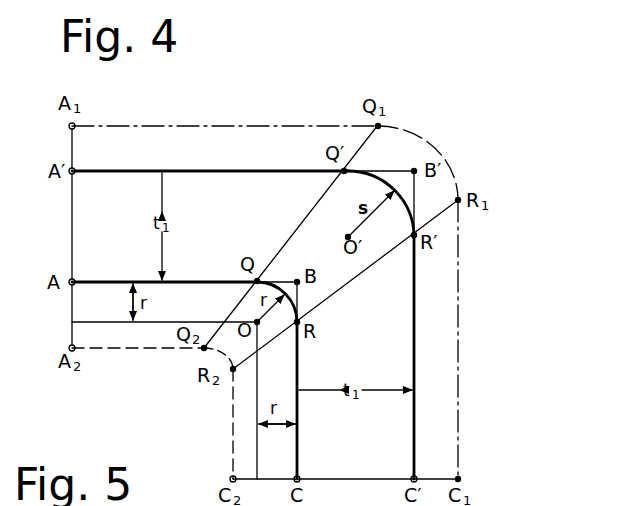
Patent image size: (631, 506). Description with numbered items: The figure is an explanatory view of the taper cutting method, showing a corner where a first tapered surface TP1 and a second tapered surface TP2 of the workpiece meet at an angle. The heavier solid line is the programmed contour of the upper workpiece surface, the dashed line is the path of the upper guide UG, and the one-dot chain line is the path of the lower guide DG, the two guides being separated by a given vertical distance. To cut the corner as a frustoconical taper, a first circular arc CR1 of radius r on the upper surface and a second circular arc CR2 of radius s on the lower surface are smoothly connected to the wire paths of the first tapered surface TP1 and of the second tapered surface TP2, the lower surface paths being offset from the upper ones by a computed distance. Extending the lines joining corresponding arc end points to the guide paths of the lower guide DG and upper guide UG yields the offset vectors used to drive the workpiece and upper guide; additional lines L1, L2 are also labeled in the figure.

The lower guide DG is at (239, 157).
The upper guide UG is at (126, 353).
The first tapered surface TP1 is at (214, 188).
The second tapered surface TP2 is at (408, 431).
The first circular arc CR1 is at (297, 280).
The second circular arc CR2 is at (407, 202).
The first line L1 is at (107, 323).
The second line L2 is at (233, 452).